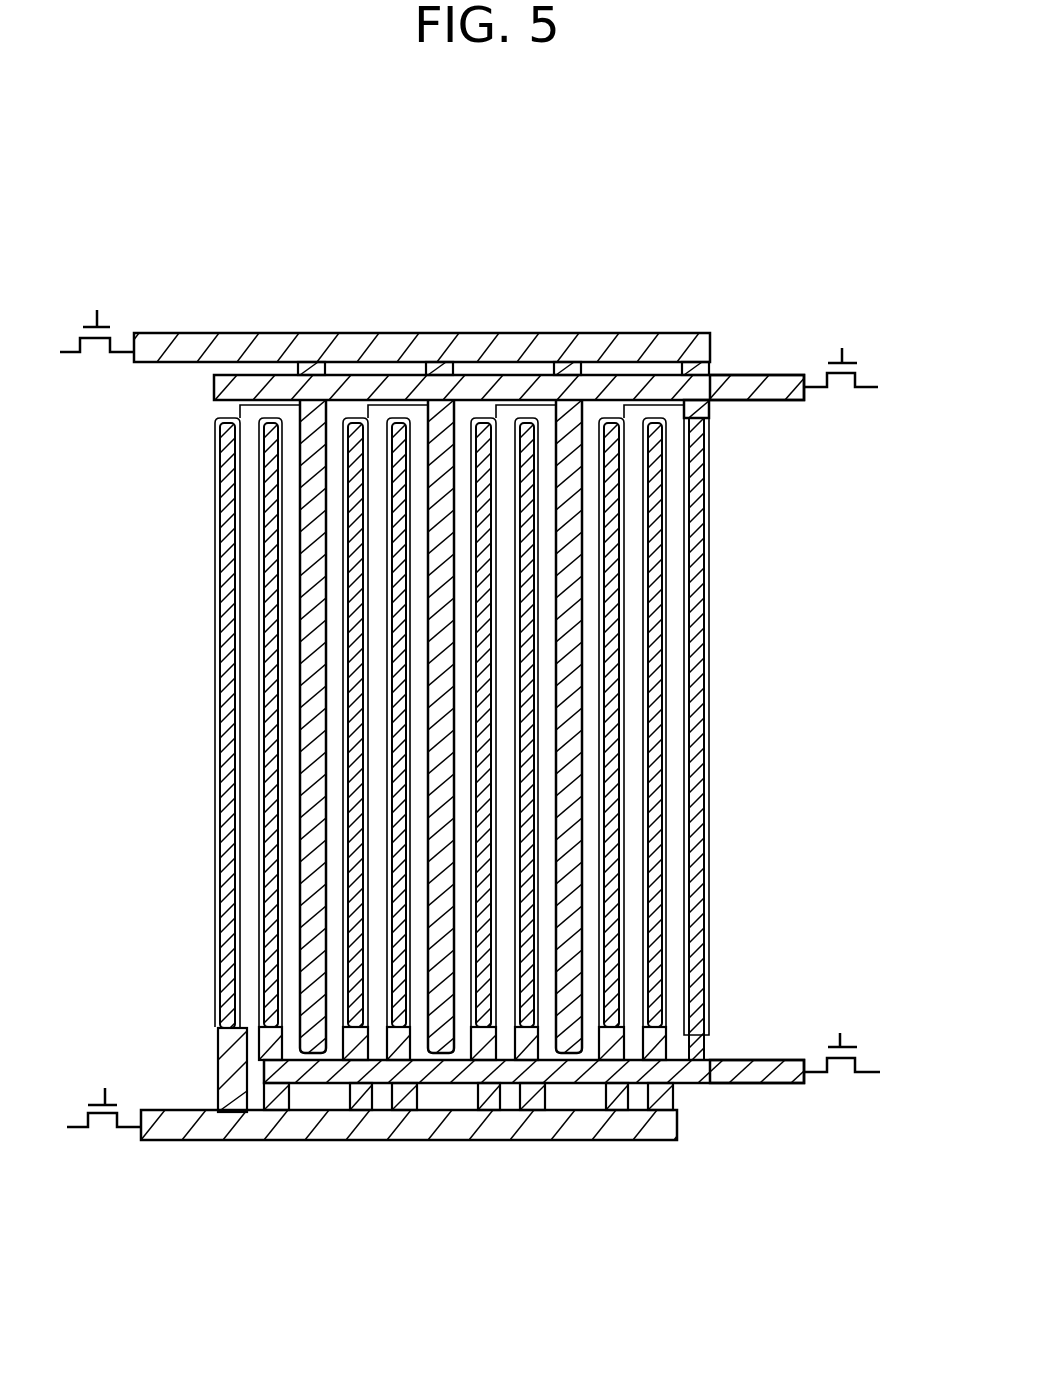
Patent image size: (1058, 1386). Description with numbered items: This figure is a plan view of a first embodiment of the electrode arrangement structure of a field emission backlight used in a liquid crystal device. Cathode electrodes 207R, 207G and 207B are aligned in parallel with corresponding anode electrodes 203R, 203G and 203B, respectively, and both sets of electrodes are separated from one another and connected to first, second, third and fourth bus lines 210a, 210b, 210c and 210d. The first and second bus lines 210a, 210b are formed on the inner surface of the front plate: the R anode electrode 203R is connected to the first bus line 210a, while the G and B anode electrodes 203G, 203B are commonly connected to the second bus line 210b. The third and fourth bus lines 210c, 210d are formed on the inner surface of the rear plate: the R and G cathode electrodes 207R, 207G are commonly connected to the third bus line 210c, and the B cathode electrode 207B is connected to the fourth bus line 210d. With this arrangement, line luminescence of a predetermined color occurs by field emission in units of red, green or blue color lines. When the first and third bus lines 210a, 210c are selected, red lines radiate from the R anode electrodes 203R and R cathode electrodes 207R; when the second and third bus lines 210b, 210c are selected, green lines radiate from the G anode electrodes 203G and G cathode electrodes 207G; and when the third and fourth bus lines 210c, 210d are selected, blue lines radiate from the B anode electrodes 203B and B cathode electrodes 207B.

The R cathode electrode 207R is at (218, 472).
The G cathode electrode 207G is at (665, 568).
The B cathode electrode 207B is at (697, 410).
The R anode electrode 203R is at (225, 995).
The G anode electrode 203G is at (658, 960).
The B anode electrode 203B is at (705, 1050).
The first bus line 210a is at (763, 388).
The second bus line 210b is at (747, 1075).
The third bus line 210c is at (208, 1122).
The fourth bus line 210d is at (223, 350).